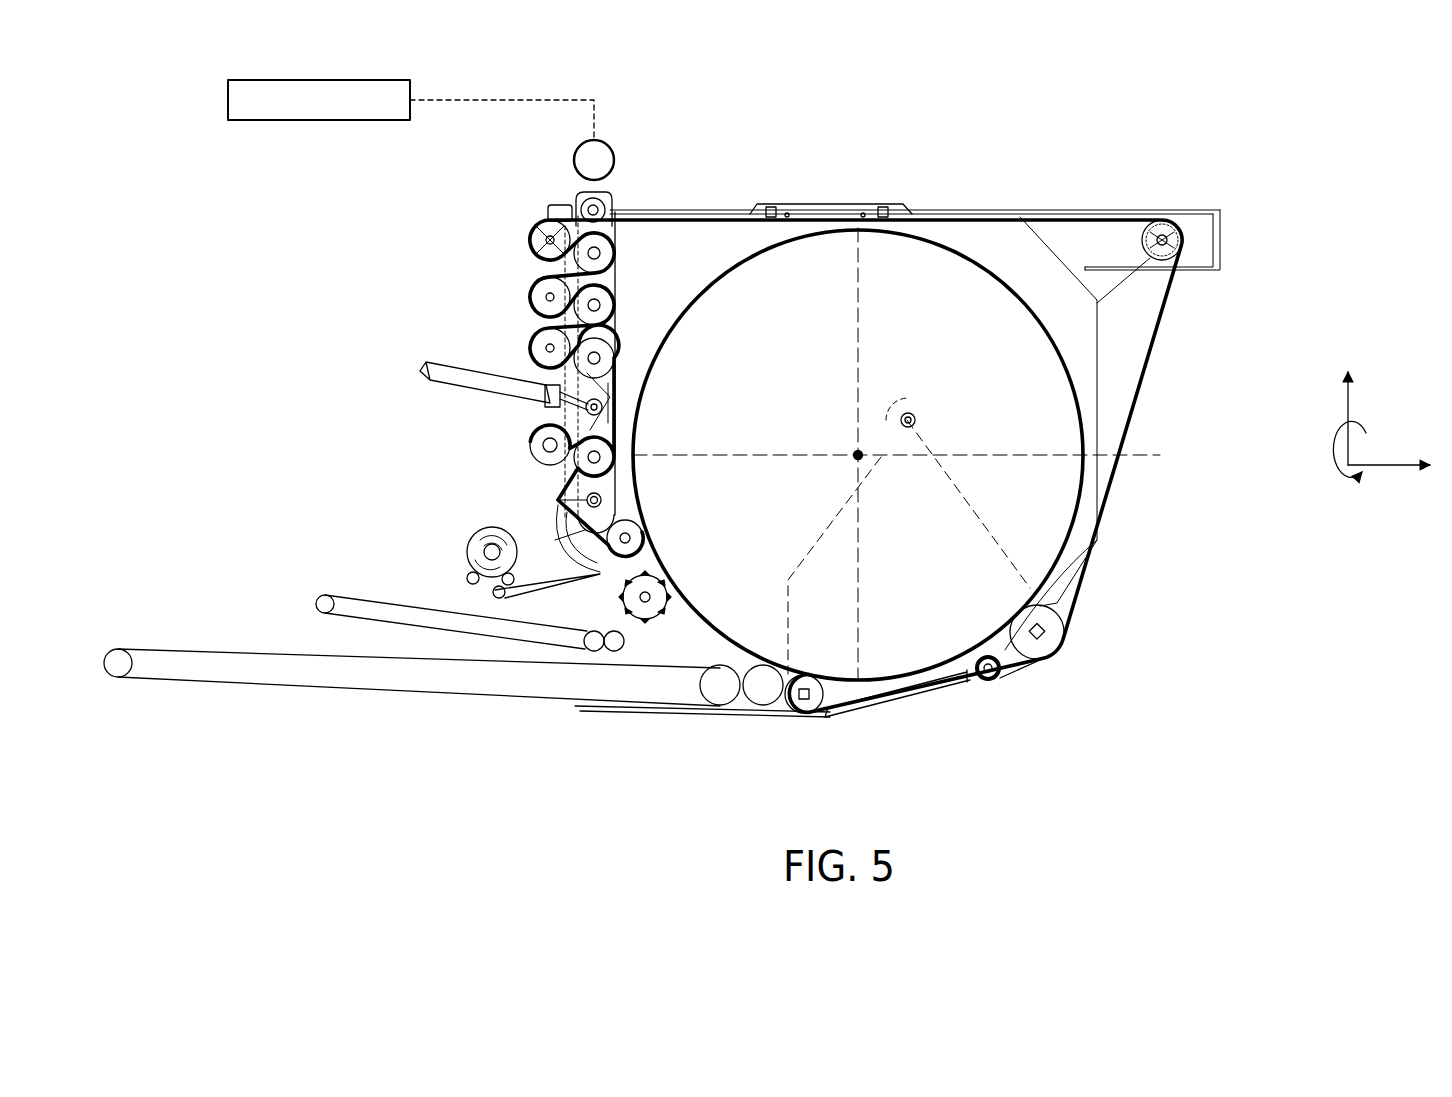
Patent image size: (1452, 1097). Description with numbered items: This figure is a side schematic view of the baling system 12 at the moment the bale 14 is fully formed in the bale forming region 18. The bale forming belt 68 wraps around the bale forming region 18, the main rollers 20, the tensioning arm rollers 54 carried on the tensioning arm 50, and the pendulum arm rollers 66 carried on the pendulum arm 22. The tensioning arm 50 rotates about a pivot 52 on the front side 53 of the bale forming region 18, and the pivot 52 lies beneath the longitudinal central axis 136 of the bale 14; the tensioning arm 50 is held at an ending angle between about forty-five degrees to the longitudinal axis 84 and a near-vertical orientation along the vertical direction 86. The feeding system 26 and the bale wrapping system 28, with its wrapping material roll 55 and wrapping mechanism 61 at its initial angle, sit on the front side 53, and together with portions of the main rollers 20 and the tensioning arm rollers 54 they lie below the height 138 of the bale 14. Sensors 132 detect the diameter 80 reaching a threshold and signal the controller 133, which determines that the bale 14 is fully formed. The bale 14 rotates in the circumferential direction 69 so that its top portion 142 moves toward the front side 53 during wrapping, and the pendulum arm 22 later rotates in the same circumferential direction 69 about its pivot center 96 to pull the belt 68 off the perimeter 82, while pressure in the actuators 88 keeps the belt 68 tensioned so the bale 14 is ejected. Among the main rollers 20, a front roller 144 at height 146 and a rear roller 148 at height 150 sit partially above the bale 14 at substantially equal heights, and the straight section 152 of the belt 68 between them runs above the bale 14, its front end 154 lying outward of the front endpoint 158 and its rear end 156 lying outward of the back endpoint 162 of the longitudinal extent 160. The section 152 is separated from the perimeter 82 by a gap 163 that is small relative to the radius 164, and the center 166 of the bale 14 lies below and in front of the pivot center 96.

The baling system 12 is at (295, 205).
The bale 14 is at (927, 637).
The bale forming region 18 is at (918, 285).
The main rollers 20 is at (1173, 222).
The pendulum arm 22 is at (980, 462).
The feeding system 26 is at (435, 597).
The bale wrapping system 28 is at (445, 490).
The tensioning arm 50 is at (613, 217).
The pivot 52 is at (558, 500).
The front side 53 is at (378, 372).
The tensioning arm rollers 54 is at (603, 260).
The wrapping material roll 55 is at (510, 533).
The wrapping mechanism 61 is at (603, 573).
The pendulum arm rollers 66 is at (1043, 647).
The bale forming belt 68 is at (1163, 317).
The circumferential direction 69 is at (1340, 460).
The diameter 80 is at (784, 491).
The perimeter 82 is at (1050, 338).
The longitudinal axis 84 is at (1385, 462).
The vertical direction 86 is at (1348, 407).
The actuators 88 is at (465, 380).
The pivot center 96 is at (915, 418).
The sensors 132 is at (615, 158).
The controller 133 is at (320, 120).
The longitudinal central axis 136 is at (924, 454).
The height 138 is at (962, 238).
The top portion 142 is at (823, 252).
The roller 144 is at (553, 210).
The height 146 is at (602, 240).
The roller 148 is at (1153, 233).
The height 150 is at (1187, 236).
The section 152 is at (742, 220).
The end 154 is at (532, 256).
The end 156 is at (1160, 250).
The front endpoint 158 is at (640, 455).
The longitudinal extent 160 is at (784, 491).
The back endpoint 162 is at (1088, 465).
The gap 163 is at (770, 233).
The radius 164 is at (719, 457).
The center 166 is at (856, 454).